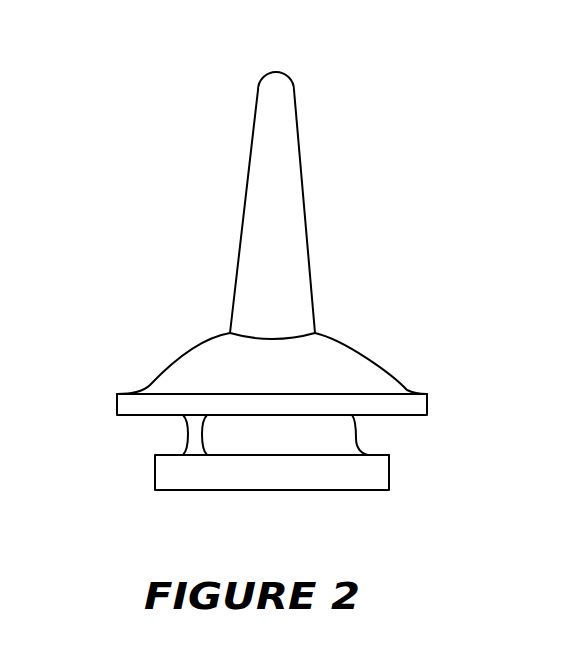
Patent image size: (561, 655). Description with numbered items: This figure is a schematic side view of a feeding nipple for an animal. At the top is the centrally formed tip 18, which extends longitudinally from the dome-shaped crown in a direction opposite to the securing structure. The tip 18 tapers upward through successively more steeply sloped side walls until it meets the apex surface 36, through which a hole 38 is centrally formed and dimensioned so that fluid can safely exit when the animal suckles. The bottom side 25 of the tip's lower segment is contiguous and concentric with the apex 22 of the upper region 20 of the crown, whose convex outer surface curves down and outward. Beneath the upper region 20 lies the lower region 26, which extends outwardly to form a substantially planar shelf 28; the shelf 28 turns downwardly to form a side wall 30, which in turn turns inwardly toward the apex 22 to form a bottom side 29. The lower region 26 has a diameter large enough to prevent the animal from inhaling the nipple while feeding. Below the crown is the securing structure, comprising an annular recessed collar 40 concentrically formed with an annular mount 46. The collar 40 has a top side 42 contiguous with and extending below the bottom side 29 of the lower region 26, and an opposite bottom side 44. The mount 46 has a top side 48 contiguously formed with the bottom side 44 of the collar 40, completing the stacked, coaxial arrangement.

The tip 18 is at (279, 153).
The upper region 20 is at (346, 374).
The apex 22 is at (325, 336).
The bottom side 25 is at (253, 337).
The lower region 26 is at (410, 403).
The shelf 28 is at (408, 392).
The bottom side 29 is at (130, 417).
The side wall 30 is at (116, 402).
The apex surface 36 is at (281, 73).
The hole 38 is at (271, 73).
The annular recessed collar 40 is at (390, 430).
The top side 42 is at (208, 416).
The bottom side 44 is at (293, 453).
The annular mount 46 is at (390, 475).
The top side 48 is at (377, 452).